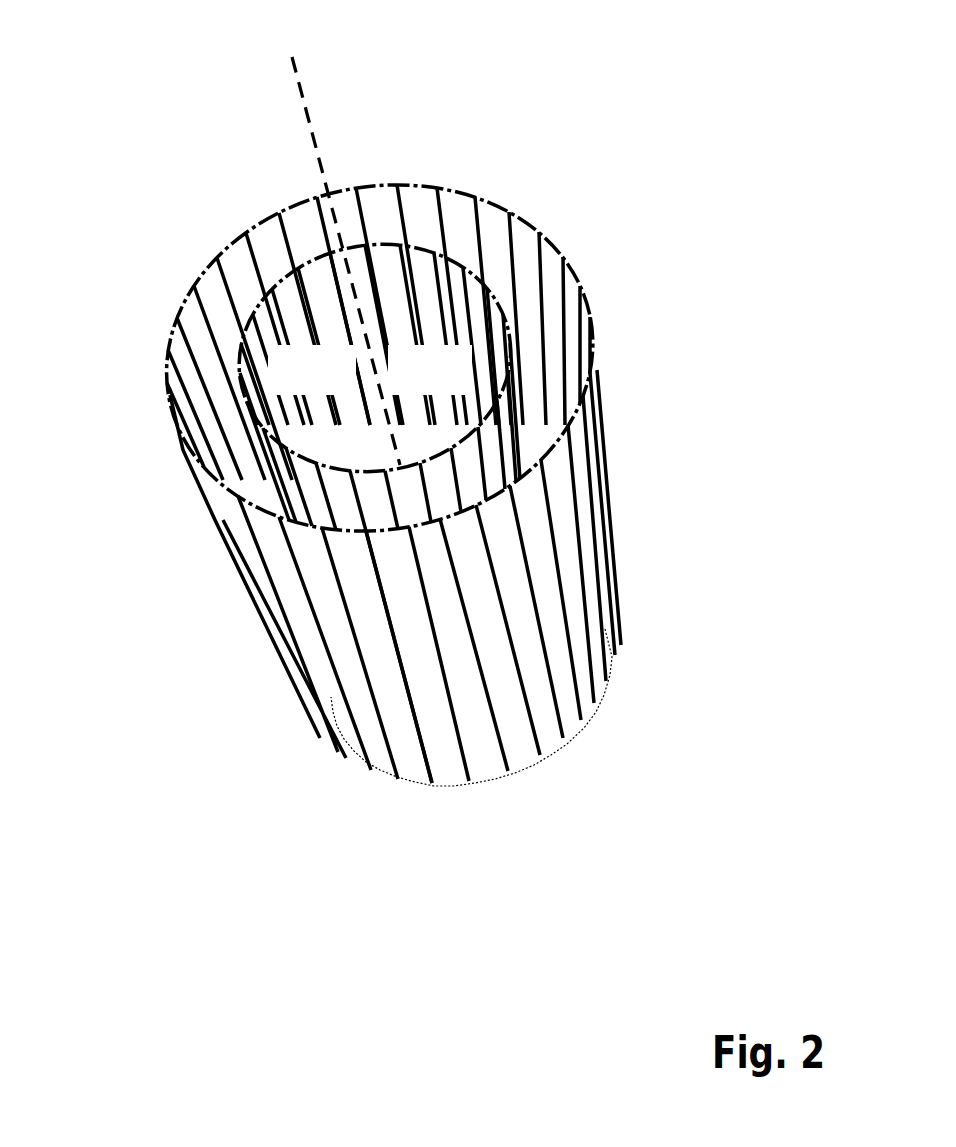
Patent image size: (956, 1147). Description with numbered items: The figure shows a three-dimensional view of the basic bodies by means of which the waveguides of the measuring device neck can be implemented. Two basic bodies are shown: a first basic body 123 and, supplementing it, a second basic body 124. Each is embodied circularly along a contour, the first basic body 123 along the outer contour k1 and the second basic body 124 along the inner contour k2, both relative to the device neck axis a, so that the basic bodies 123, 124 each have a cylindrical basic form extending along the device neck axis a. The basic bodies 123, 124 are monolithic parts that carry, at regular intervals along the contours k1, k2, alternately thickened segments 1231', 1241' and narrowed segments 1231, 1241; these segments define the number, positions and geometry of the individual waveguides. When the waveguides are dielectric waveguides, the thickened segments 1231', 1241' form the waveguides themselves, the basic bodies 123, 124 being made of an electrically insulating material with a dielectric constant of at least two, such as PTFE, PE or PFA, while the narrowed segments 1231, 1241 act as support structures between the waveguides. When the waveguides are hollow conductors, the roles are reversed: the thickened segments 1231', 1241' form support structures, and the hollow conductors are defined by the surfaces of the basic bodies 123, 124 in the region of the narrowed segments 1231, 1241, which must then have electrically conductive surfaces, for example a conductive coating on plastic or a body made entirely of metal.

The first basic body 123 is at (204, 600).
The narrowed segments 1231 is at (399, 713).
The thickened segments 1231' is at (543, 672).
The second basic body 124 is at (556, 364).
The narrowed segments 1241 is at (375, 335).
The thickened segments 1241' is at (383, 437).
The contour k1 is at (170, 343).
The contour k2 is at (260, 305).
The device neck axis a is at (336, 232).